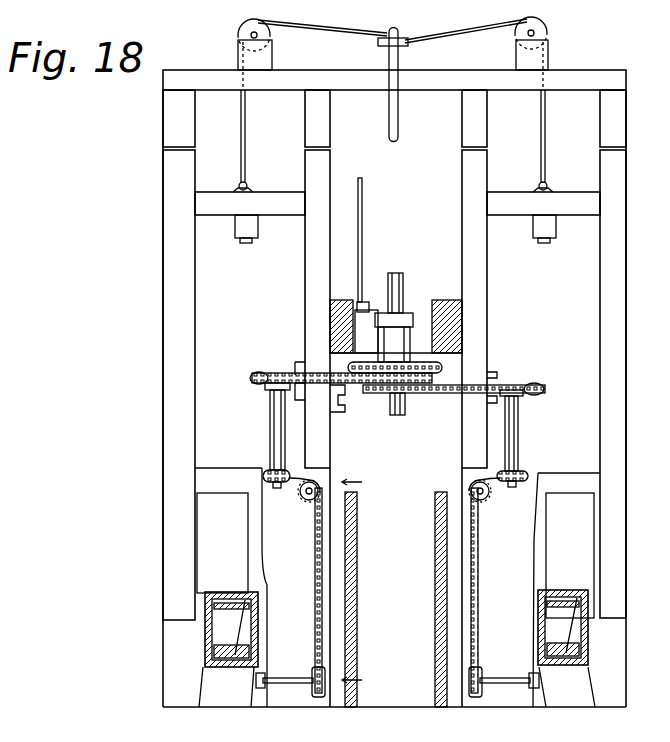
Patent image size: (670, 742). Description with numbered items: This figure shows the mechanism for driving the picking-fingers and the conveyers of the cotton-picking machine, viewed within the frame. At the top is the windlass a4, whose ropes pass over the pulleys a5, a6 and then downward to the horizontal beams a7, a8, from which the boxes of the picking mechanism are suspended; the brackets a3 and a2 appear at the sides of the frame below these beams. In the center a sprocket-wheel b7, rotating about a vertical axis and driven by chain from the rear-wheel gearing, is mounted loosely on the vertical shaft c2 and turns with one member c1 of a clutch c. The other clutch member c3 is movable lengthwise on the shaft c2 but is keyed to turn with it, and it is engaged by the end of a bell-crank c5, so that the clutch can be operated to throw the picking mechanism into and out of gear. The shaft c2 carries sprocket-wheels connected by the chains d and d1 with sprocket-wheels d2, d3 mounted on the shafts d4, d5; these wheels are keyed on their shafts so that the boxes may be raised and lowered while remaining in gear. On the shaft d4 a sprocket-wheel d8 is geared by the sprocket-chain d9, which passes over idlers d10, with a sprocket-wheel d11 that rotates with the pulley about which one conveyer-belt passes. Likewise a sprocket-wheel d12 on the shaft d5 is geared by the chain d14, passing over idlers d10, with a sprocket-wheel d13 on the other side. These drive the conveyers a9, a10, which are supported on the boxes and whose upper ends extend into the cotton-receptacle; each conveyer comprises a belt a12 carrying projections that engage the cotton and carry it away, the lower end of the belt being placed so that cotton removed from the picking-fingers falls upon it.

The bracket a2 is at (607, 484).
The bracket a3 is at (192, 484).
The windlass a4 is at (399, 42).
The pulley a5 is at (549, 30).
The pulley a6 is at (258, 25).
The horizontal beam a7 is at (248, 228).
The horizontal beam a8 is at (546, 228).
The conveyer a9 is at (212, 595).
The conveyer a10 is at (553, 594).
The belt a12 is at (396, 628).
The sprocket-wheel b7 is at (412, 370).
The clutch c is at (366, 331).
The clutch member c1 is at (418, 350).
The shaft c2 is at (398, 286).
The clutch member c3 is at (413, 345).
The bell-crank c5 is at (366, 303).
The chain d is at (443, 392).
The chain d1 is at (356, 380).
The sprocket-wheel d2 is at (538, 385).
The sprocket-wheel d3 is at (258, 372).
The shaft d4 is at (520, 430).
The shaft d5 is at (271, 427).
The sprocket-wheel d8 is at (526, 478).
The sprocket-chain d9 is at (476, 554).
The idler d10 is at (303, 502).
The sprocket-wheel d11 is at (481, 674).
The sprocket-wheel d12 is at (273, 484).
The sprocket-wheel d13 is at (314, 668).
The chain d14 is at (315, 587).